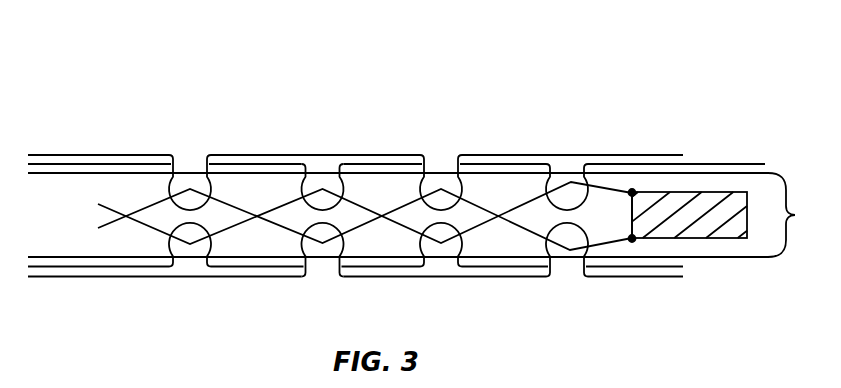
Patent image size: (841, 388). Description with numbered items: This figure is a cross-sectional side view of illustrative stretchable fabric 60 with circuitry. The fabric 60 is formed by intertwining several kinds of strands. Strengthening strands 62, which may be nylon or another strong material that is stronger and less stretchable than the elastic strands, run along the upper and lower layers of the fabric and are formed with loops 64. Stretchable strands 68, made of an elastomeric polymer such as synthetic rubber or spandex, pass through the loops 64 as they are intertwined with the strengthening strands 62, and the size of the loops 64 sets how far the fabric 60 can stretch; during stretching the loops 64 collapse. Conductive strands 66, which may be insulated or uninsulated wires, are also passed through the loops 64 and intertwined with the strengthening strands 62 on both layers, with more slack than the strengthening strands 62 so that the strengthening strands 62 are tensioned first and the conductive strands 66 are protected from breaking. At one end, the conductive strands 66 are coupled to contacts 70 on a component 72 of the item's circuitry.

The fabric 60 is at (580, 70).
The strengthening strands 62 is at (75, 163).
The loops 64 is at (597, 205).
The conductive strands 66 is at (530, 232).
The contacts 70 is at (633, 192).
The component 72 is at (714, 191).
The stretchable strands 68 is at (796, 215).